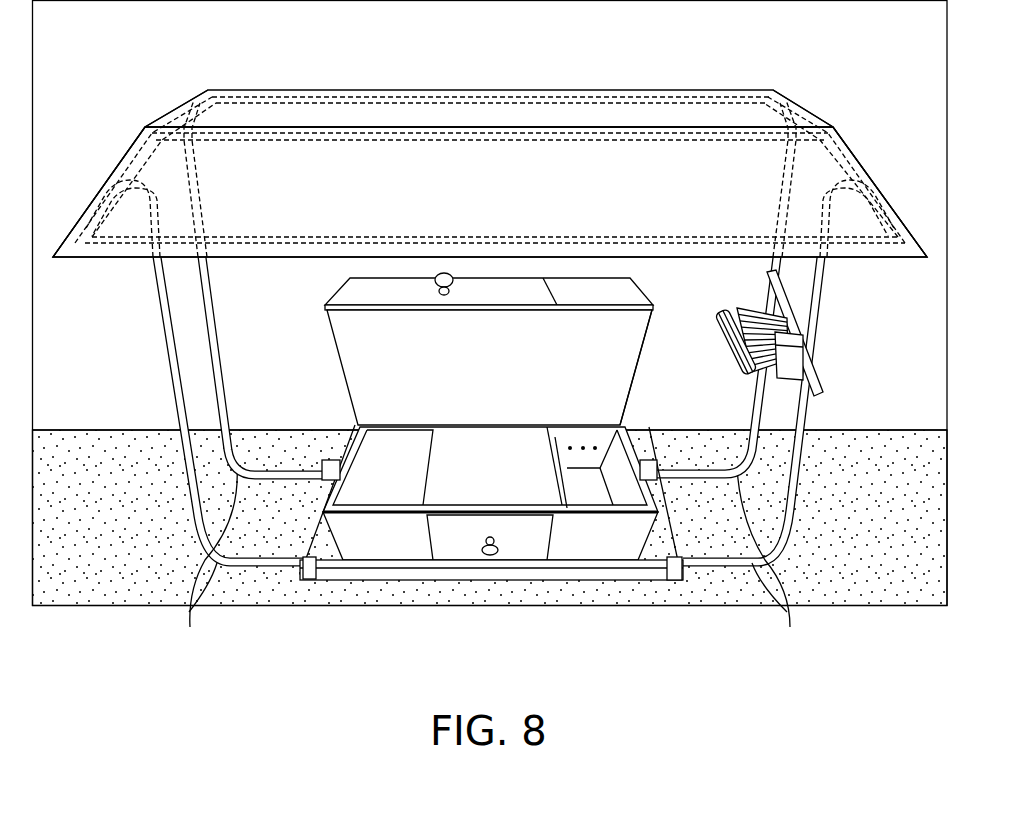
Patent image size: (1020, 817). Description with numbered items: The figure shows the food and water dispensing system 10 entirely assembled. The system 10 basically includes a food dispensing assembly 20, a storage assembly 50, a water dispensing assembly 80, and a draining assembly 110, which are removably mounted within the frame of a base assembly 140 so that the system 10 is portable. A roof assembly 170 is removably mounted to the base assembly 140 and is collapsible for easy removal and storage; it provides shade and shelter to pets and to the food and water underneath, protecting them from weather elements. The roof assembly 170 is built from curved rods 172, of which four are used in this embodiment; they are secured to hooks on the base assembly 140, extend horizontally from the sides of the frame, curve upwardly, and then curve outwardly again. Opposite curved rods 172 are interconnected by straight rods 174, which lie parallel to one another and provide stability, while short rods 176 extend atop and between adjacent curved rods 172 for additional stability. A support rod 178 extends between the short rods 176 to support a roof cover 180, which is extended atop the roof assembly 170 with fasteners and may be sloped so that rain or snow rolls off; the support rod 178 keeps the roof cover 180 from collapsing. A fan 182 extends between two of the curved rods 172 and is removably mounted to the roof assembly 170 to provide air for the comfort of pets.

The food and water dispensing system 10 is at (490, 330).
The food dispensing assembly 20 is at (489, 349).
The storage assembly 50 is at (456, 571).
The water dispensing assembly 80 is at (650, 385).
The draining assembly 110 is at (566, 521).
The base assembly 140 is at (371, 592).
The roof assembly 170 is at (494, 169).
The curved rods 172 is at (489, 458).
The straight rods 174 is at (368, 102).
The short rods 176 is at (140, 140).
The support rod 178 is at (485, 128).
The roof cover 180 is at (628, 117).
The fan 182 is at (830, 370).